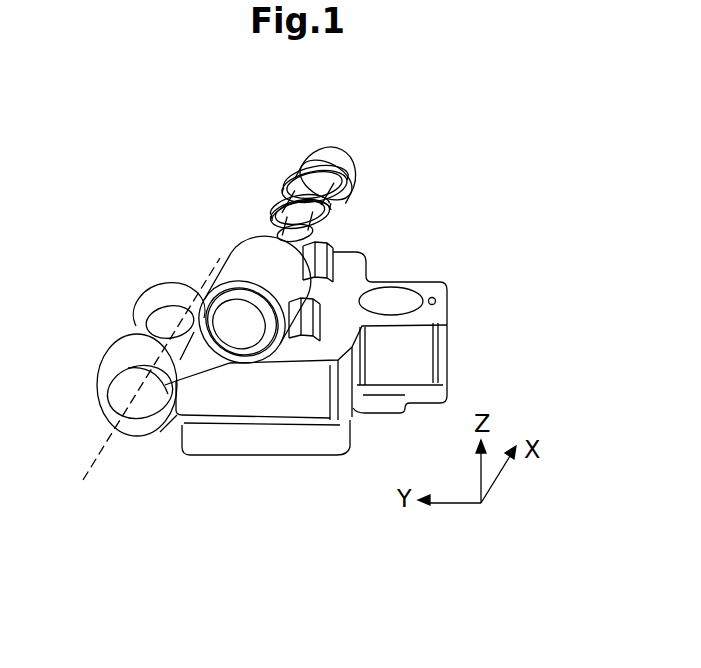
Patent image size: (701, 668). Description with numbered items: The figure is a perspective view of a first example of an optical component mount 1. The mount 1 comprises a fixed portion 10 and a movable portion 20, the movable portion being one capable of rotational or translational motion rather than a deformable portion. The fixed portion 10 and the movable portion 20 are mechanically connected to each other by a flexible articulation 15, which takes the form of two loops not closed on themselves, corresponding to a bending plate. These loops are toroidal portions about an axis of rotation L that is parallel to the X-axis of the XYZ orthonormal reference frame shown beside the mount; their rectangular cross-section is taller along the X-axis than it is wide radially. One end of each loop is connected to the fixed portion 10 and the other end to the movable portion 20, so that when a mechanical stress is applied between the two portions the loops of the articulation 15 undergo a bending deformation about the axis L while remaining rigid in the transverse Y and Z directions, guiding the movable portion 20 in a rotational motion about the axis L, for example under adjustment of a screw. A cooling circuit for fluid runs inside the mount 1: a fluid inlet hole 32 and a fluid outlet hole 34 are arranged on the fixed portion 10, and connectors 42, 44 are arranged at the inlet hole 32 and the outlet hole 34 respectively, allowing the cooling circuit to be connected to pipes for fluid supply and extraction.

The optical component mount 1 is at (488, 332).
The fixed portion 10 is at (347, 290).
The articulation 15 is at (158, 298).
The movable portion 20 is at (292, 446).
The fluid inlet hole 32 is at (340, 252).
The fluid outlet hole 34 is at (308, 318).
The connector 42 is at (317, 158).
The connector 44 is at (248, 257).
The axis of rotation L is at (103, 450).